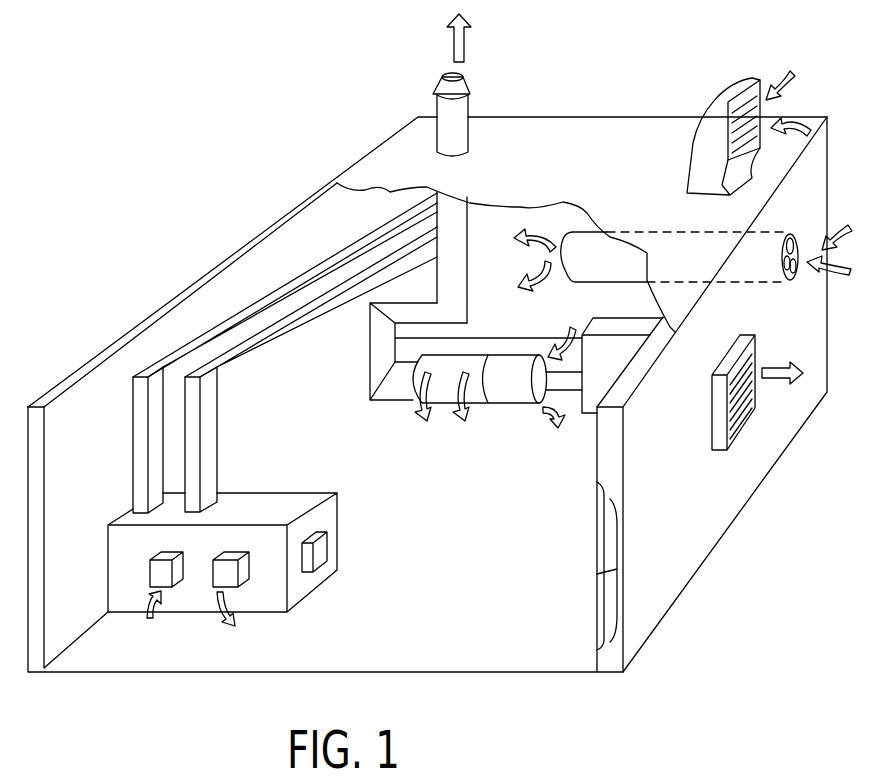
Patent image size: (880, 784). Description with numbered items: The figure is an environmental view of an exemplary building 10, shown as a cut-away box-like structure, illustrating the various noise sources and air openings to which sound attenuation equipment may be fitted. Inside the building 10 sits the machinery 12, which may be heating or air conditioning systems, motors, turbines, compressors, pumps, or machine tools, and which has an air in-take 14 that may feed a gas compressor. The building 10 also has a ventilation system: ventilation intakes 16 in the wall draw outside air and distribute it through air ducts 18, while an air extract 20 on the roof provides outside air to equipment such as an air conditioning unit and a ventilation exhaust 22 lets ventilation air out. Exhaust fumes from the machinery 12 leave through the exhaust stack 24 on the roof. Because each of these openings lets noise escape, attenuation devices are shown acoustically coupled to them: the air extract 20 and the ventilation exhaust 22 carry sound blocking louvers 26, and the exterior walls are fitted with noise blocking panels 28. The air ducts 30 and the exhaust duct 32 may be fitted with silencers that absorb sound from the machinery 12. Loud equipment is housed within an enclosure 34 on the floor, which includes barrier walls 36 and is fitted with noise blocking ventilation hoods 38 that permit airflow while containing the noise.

The building 10 is at (203, 66).
The machinery 12 is at (450, 393).
The air in-take 14 is at (512, 398).
The ventilation intakes 16 is at (795, 236).
The air ducts 18 is at (602, 272).
The air extract 20 is at (730, 87).
The ventilation exhaust 22 is at (715, 424).
The exhaust stack 24 is at (461, 108).
The sound blocking louvers 26 is at (733, 121).
The noise blocking panels 28 is at (600, 585).
The air ducts 30 is at (421, 203).
The exhaust duct 32 is at (377, 347).
The enclosure 34 is at (236, 476).
The barrier walls 36 is at (310, 537).
The noise blocking ventilation hoods 38 is at (233, 558).